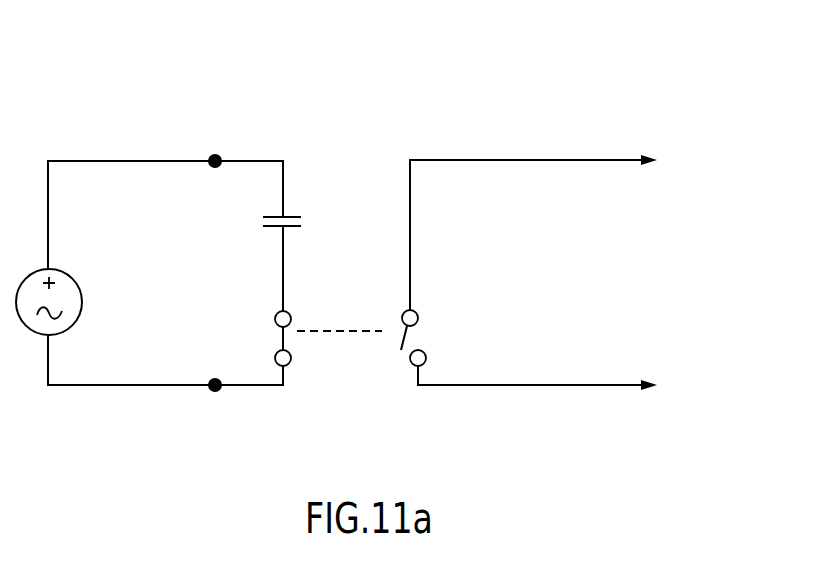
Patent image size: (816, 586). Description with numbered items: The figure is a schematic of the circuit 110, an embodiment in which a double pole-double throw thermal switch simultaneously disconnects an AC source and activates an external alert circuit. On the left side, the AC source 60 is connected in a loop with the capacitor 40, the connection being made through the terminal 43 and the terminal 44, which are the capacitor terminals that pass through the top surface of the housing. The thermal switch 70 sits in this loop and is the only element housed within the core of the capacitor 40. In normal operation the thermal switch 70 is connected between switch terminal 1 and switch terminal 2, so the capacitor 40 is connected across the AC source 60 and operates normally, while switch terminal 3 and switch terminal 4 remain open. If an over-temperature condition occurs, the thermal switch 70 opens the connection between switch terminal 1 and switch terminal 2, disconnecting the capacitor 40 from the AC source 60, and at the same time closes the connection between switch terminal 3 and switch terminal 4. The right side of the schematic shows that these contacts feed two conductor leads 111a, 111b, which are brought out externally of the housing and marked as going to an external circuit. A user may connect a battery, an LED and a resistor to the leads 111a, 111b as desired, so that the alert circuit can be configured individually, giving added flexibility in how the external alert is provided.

The circuit 110 is at (136, 71).
The AC source 60 is at (26, 278).
The terminal 43 is at (213, 154).
The terminal 44 is at (214, 392).
The capacitor 40 is at (262, 218).
The thermal switch 70 is at (354, 311).
The switch terminal 1 is at (276, 359).
The switch terminal 2 is at (276, 319).
The switch terminal 3 is at (424, 319).
The switch terminal 4 is at (428, 359).
The conductor lead 111a is at (598, 160).
The conductor lead 111b is at (598, 385).